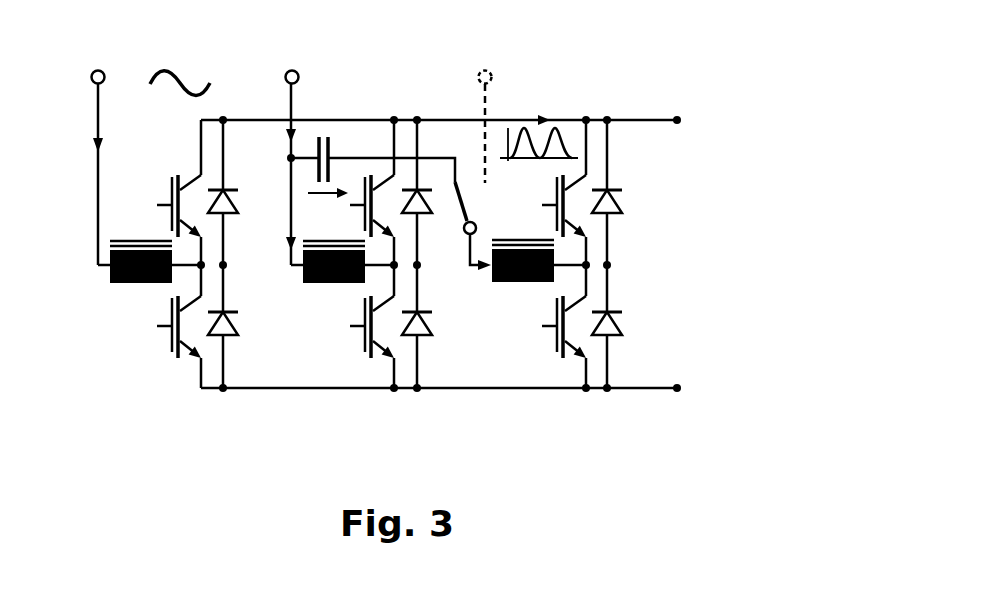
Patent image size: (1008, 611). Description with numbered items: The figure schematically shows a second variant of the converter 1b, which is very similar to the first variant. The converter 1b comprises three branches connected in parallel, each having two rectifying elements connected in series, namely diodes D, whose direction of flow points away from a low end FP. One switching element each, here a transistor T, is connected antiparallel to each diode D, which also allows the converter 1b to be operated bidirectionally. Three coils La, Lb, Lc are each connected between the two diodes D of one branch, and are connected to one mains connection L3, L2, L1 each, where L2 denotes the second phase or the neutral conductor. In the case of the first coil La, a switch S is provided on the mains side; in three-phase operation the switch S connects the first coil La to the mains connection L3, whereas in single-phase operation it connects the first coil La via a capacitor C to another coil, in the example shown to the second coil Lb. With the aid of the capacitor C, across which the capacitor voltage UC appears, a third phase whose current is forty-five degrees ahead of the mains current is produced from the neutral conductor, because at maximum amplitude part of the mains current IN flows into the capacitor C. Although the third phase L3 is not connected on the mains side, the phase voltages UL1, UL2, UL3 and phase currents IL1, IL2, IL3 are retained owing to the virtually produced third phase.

The converter 1b is at (690, 48).
The low end FP is at (557, 388).
The transistor T is at (172, 329).
The diode D is at (236, 326).
The coil Lc is at (149, 281).
The second coil Lb is at (342, 281).
The first coil La is at (539, 281).
The mains connection L1 is at (101, 58).
The mains connection (second phase or neutral conductor) L2 is at (285, 58).
The mains connection (third phase) L3 is at (484, 107).
The phase voltage UL1 is at (70, 165).
The phase voltage UL2 is at (264, 165).
The phase voltage UL3 is at (493, 235).
The phase current IL1 is at (80, 141).
The phase current IL2 is at (275, 233).
The phase current IL3 is at (474, 281).
The mains current IN is at (277, 143).
The capacitor C is at (373, 157).
The capacitor voltage UC is at (328, 210).
The switch S is at (458, 212).